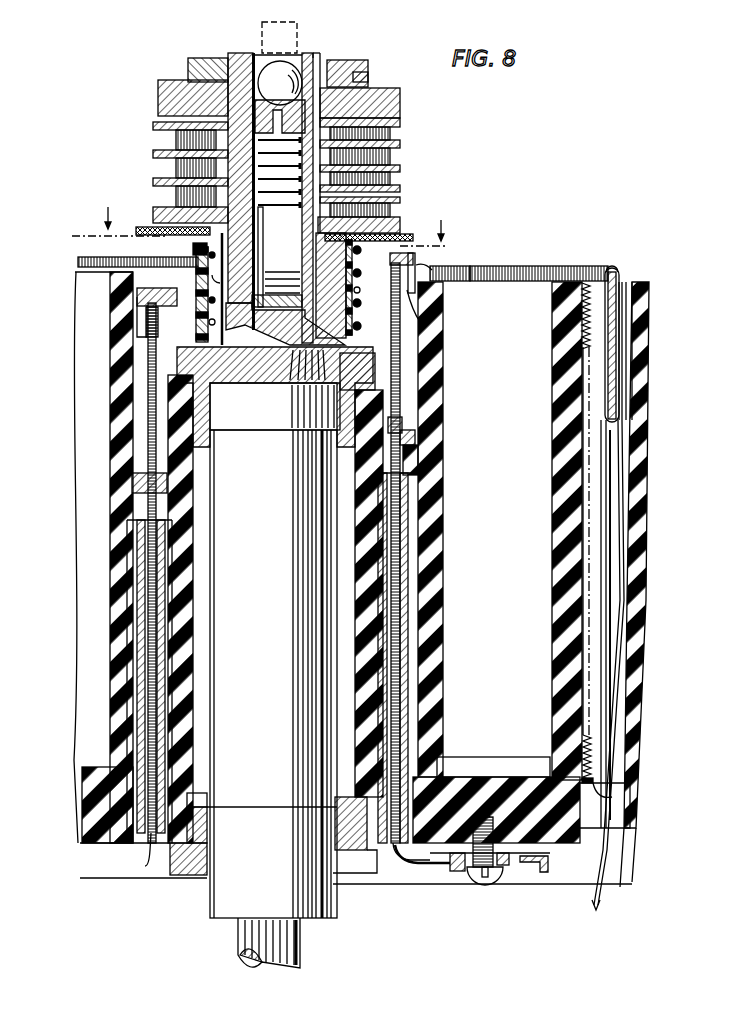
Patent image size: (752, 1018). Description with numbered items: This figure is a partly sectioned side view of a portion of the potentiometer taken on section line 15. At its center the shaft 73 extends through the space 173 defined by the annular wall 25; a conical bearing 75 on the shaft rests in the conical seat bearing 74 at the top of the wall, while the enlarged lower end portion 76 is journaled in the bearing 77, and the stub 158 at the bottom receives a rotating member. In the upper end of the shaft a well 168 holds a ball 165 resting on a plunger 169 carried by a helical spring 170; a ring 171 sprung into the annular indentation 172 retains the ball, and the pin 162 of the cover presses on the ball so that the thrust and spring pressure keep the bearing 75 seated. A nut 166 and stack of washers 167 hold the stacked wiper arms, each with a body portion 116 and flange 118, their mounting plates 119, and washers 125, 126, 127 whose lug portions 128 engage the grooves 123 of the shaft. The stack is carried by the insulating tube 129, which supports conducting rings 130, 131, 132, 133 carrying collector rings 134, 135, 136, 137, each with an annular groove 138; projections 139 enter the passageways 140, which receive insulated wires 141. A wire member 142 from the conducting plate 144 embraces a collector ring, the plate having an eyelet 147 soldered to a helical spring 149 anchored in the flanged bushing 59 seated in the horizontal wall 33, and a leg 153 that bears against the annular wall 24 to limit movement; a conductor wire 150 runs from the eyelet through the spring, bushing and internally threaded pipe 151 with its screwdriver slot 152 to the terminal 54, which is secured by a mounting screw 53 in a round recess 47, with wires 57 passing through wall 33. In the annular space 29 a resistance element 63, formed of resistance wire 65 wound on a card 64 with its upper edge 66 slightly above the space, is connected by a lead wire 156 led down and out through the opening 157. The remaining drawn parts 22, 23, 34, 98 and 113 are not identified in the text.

The section line 15 is at (277, 224).
The outer casing wall 22 is at (640, 437).
The top plate 23 is at (574, 270).
The annular wall 24 is at (443, 338).
The annular wall 25 is at (192, 740).
The annular space 29 is at (627, 290).
The horizontal wall 33 is at (442, 457).
The bottom block 34 is at (526, 768).
The round recess 47 is at (485, 815).
The mounting screw 53 is at (488, 880).
The terminal 54 is at (463, 872).
The wire 57 is at (428, 864).
The flanged bushing 59 is at (414, 440).
The resistance element 63 is at (614, 268).
The card 64 is at (612, 303).
The resistance wire 65 is at (622, 332).
The upper edge of resistance element 66 is at (606, 275).
The shaft 73 is at (270, 806).
The conical seat bearing 74 is at (375, 372).
The conical bearing 75 is at (216, 395).
The enlarged lower end portion 76 is at (224, 922).
The bearing 77 is at (197, 862).
The threaded wall 98 is at (585, 294).
The fin plate 113 is at (398, 162).
The body portion 116 is at (398, 193).
The upwardly extending flange 118 is at (162, 198).
The mounting plate 119 is at (160, 125).
The grooves 123 is at (318, 66).
The washer 125 is at (398, 218).
The washer 126 is at (398, 178).
The washer 127 is at (398, 146).
The lug portion 128 is at (398, 128).
The insulating tube 129 is at (403, 236).
The conducting ring 130 is at (185, 254).
The conducting ring 131 is at (277, 273).
The conducting ring 132 is at (148, 333).
The conducting ring 133 is at (212, 368).
The collector ring 134 is at (175, 229).
The collector ring 135 is at (190, 285).
The collector ring 136 is at (150, 306).
The collector ring 137 is at (219, 348).
The annular groove 138 is at (352, 345).
The inwardly extending projection 139 is at (217, 312).
The longitudinal passageway 140 is at (225, 333).
The insulated wire 141 is at (265, 226).
The wire member 142 is at (360, 288).
The conducting plate 144 is at (420, 262).
The eyelet 147 is at (446, 246).
The helical spring 149 is at (130, 470).
The conductor wire 150 is at (400, 417).
The internally threaded pipe 151 is at (137, 672).
The screwdriver slot 152 is at (145, 840).
The downwardly extending leg 153 is at (418, 280).
The lead wire 156 is at (620, 578).
The opening 157 is at (612, 797).
The stub 158 is at (300, 952).
The pin 162 is at (262, 32).
The ball 165 is at (277, 80).
The nut 166 is at (348, 60).
The stack of washers 167 is at (375, 120).
The well 168 is at (352, 78).
The plunger 169 is at (165, 90).
The helical spring 170 is at (243, 164).
The ring 171 is at (253, 65).
The annular indentation 172 is at (308, 58).
The space 173 is at (207, 790).